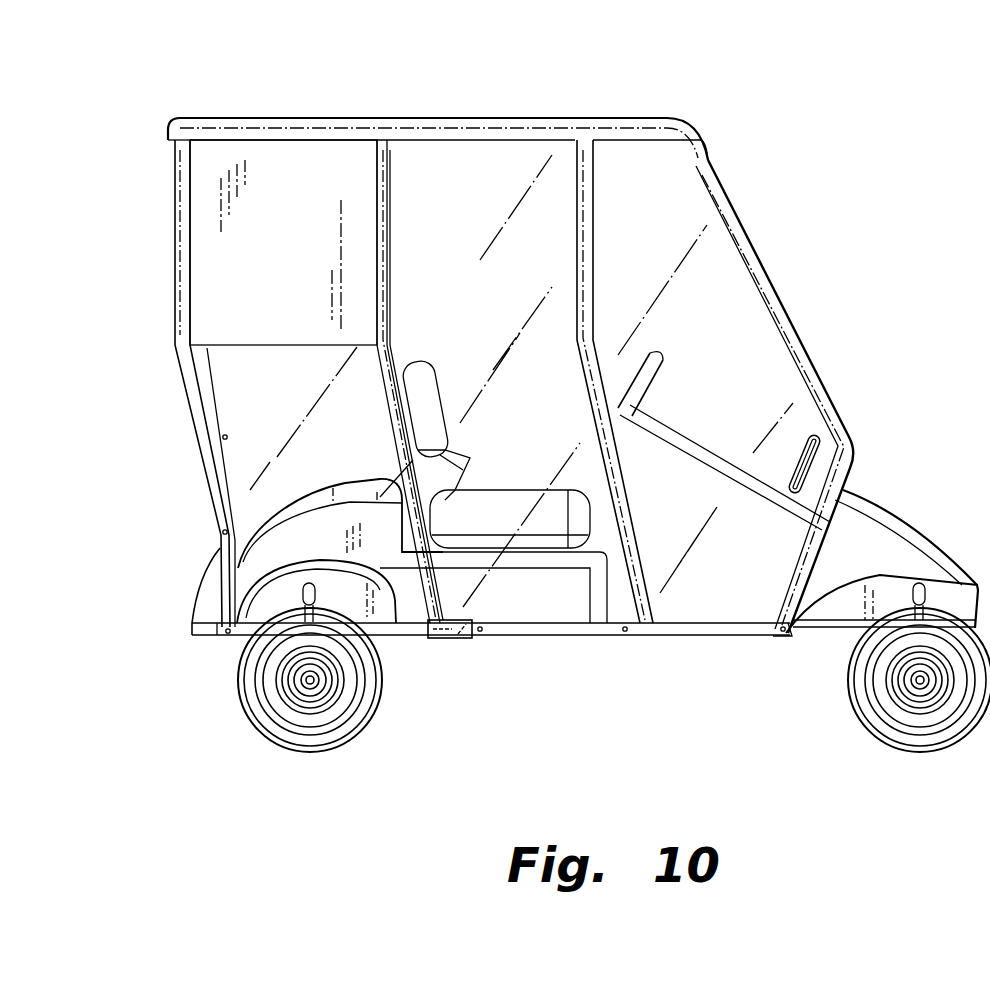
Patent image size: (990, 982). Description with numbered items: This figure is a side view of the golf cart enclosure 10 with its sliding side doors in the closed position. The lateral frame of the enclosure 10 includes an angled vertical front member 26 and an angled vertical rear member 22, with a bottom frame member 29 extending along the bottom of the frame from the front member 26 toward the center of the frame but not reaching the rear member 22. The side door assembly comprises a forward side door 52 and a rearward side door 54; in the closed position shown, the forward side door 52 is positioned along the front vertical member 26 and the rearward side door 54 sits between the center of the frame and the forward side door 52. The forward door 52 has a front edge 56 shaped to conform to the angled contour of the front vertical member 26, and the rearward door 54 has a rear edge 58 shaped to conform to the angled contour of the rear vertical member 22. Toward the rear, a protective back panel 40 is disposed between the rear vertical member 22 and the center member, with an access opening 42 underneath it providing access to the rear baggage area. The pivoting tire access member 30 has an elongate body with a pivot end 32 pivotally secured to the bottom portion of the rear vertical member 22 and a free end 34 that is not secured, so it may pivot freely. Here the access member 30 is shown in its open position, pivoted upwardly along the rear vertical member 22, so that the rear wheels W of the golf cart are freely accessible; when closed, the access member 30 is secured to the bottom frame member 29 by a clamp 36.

The golf cart enclosure 10 is at (852, 147).
The angled vertical rear member 22 is at (183, 213).
The angled vertical front member 26 is at (838, 402).
The bottom frame member 29 is at (568, 636).
The pivoting tire access member 30 is at (225, 558).
The pivot end 32 is at (225, 637).
The free end 34 is at (220, 395).
The clamp 36 is at (447, 638).
The protective back panel 40 is at (292, 255).
The access opening 42 is at (275, 467).
The forward side door 52 is at (662, 267).
The rearward side door 54 is at (512, 330).
The front edge 56 is at (768, 318).
The rear edge 58 is at (383, 213).
The rear wheels W is at (330, 740).